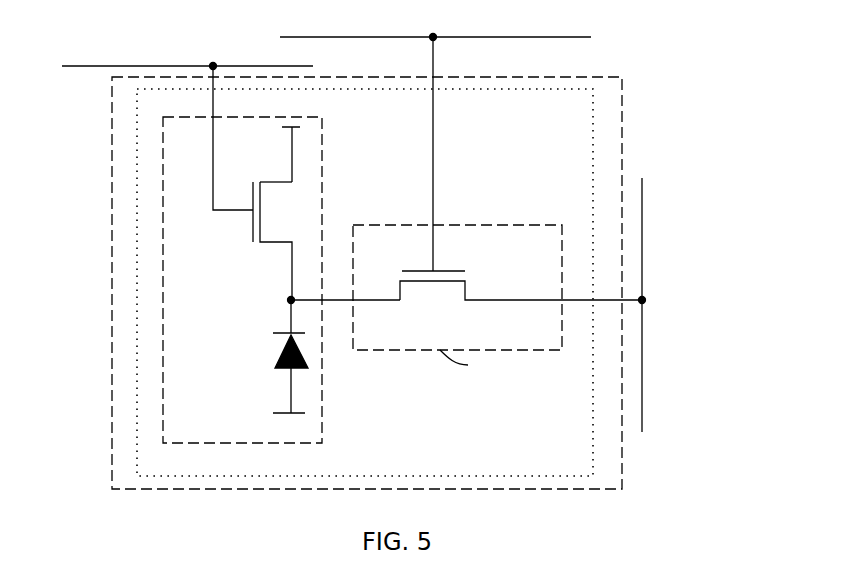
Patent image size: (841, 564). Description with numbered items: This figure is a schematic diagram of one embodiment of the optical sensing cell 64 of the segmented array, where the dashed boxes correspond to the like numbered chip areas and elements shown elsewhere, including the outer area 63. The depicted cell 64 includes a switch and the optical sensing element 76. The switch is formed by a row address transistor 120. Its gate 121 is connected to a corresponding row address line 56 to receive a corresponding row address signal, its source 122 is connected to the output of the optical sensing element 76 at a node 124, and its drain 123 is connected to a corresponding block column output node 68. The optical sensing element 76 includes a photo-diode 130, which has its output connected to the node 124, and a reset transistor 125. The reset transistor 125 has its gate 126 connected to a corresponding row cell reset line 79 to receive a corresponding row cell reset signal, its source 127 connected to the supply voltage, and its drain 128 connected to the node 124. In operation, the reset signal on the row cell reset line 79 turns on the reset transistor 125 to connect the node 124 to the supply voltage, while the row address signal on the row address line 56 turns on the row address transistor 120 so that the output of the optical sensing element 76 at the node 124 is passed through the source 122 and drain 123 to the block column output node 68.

The row address line 56 is at (465, 37).
The pixel cell 63 is at (112, 280).
The optical sensing cell 64 is at (593, 456).
The block column output node 68 is at (642, 240).
The optical sensing element 76 is at (322, 367).
The row cell reset line 79 is at (92, 63).
The row address transistor 120 is at (497, 205).
The gate 121 is at (432, 262).
The source 122 is at (385, 302).
The drain 123 is at (485, 302).
The node 124 is at (288, 302).
The reset transistor 125 is at (236, 183).
The gate 126 is at (233, 212).
The source 127 is at (285, 182).
The drain 128 is at (285, 243).
The photo-diode 130 is at (275, 368).